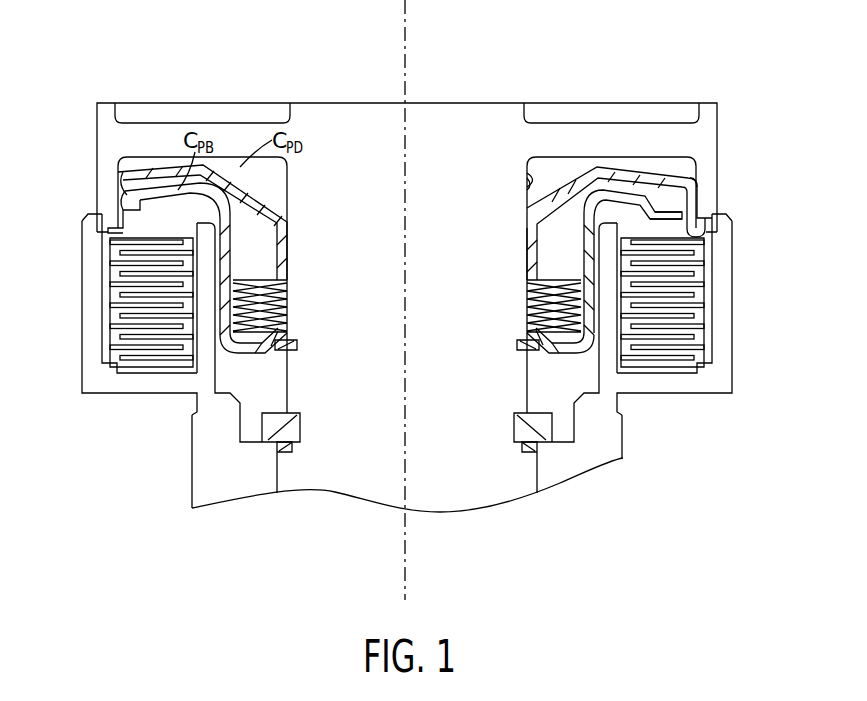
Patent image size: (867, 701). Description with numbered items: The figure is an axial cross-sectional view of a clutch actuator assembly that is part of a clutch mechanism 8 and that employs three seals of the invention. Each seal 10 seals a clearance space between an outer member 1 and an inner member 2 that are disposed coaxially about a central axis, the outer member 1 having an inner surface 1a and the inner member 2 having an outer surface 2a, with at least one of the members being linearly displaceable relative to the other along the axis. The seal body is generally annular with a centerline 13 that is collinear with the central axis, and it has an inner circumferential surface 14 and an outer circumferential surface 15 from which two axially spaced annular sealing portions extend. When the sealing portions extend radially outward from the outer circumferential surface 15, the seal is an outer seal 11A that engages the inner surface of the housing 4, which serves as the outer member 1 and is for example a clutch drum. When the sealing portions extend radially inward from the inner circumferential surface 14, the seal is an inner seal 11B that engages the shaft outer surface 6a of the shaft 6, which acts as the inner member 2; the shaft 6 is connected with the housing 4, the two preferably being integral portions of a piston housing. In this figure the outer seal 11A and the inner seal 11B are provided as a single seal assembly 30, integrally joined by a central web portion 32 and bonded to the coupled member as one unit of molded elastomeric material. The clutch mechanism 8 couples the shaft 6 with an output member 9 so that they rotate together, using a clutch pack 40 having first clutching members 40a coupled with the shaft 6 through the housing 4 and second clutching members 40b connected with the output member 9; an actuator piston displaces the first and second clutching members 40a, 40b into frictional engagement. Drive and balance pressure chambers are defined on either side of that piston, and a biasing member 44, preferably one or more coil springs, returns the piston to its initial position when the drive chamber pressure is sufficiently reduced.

The outer member 1 is at (656, 154).
The inner surface 1a is at (693, 152).
The inner member 2 is at (498, 64).
The outer surface 2a is at (682, 216).
The housing 4 is at (96, 133).
The shaft 6 is at (234, 271).
The shaft outer surface 6a is at (528, 191).
The clutch mechanism 8 is at (72, 445).
The output member 9 is at (188, 478).
The seal 10 is at (133, 166).
The outer seal 11A is at (698, 172).
The inner seal 11B is at (292, 203).
The centerline 13 is at (410, 38).
The inner circumferential surface 14 is at (292, 216).
The outer circumferential surface 15 is at (130, 196).
The seal assembly 30 is at (599, 166).
The central web portion 32 is at (597, 167).
The clutch pack 40 is at (100, 316).
The first clutching members 40a is at (700, 246).
The second clutching members 40b is at (120, 247).
The biasing member 44 is at (554, 280).